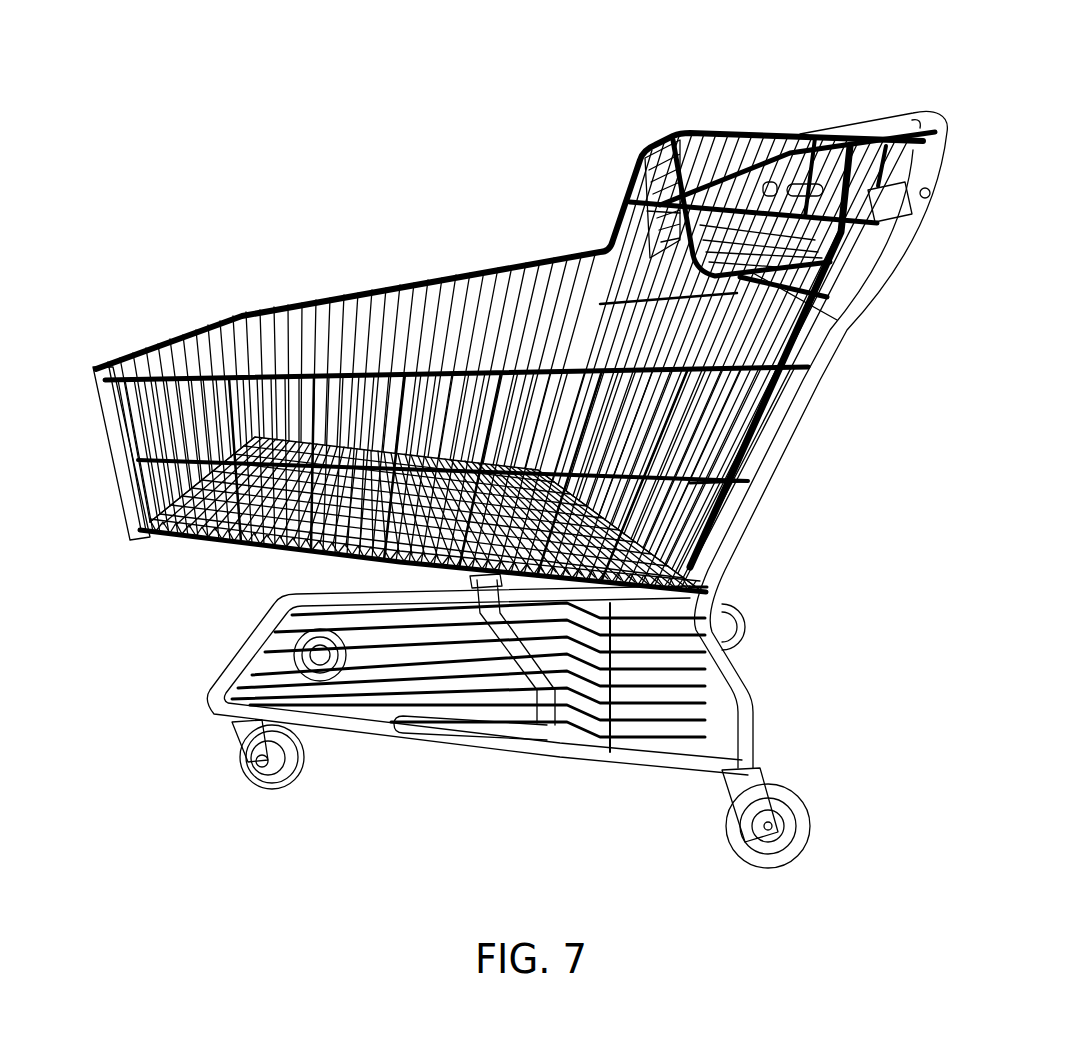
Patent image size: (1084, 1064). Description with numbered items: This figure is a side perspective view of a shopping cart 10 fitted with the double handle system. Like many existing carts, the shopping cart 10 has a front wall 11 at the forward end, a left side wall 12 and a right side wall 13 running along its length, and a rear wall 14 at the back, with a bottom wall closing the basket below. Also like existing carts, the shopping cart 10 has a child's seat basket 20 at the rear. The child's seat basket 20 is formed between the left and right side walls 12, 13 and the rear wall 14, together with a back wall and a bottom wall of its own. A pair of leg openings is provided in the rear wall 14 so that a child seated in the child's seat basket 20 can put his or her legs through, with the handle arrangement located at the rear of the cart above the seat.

The shopping cart 10 is at (296, 211).
The front wall 11 is at (95, 508).
The left side wall 12 is at (446, 276).
The right side wall 13 is at (300, 317).
The rear wall 14 is at (842, 471).
The child's seat basket 20 is at (787, 103).